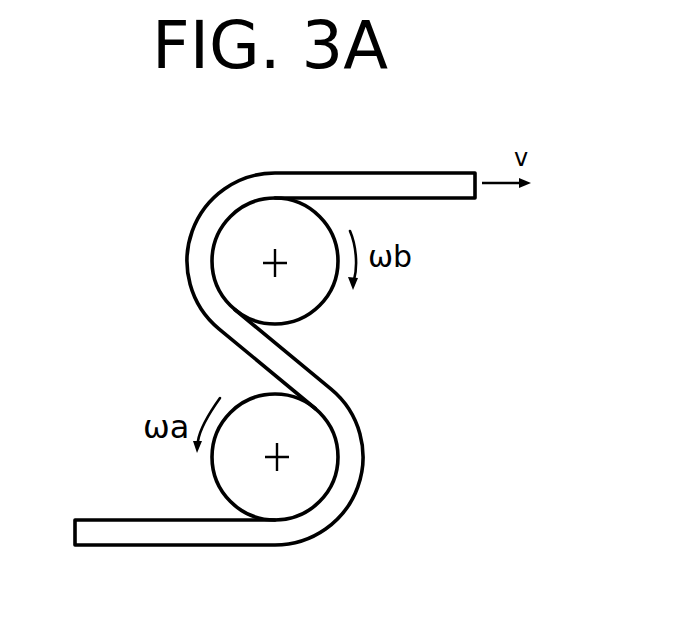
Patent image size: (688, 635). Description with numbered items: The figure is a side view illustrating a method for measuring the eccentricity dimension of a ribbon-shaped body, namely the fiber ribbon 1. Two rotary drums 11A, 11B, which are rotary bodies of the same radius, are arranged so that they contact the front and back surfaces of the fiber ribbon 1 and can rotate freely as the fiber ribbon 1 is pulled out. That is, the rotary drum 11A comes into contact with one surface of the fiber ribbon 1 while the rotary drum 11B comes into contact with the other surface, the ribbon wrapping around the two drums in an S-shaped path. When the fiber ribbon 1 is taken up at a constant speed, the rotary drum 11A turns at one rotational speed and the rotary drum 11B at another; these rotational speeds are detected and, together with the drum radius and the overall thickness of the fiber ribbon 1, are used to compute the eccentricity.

The fiber ribbon 1 is at (170, 532).
The rotary drum 11A is at (236, 470).
The rotary drum 11B is at (313, 284).